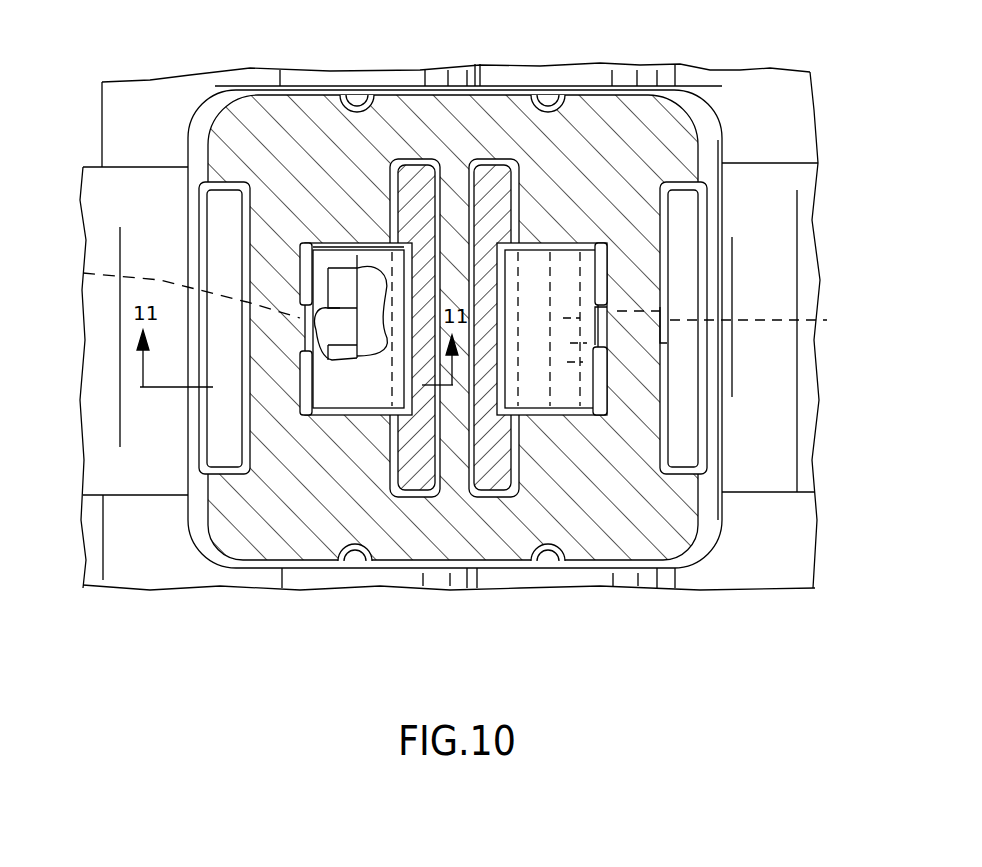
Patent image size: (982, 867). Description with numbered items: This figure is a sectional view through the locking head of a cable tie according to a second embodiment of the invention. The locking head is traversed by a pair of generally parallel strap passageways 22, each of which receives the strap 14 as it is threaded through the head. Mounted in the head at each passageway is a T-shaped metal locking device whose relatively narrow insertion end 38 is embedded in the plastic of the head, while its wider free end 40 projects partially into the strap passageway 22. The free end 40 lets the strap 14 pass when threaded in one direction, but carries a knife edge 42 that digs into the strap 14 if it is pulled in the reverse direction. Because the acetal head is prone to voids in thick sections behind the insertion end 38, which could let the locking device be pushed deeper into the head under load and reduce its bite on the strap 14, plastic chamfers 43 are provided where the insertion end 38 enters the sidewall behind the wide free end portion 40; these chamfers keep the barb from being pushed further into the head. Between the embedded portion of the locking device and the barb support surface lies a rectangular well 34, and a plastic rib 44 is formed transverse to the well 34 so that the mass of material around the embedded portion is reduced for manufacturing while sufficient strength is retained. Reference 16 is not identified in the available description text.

The strap 14 is at (265, 93).
The lower plate 16 is at (575, 583).
The strap passageway 22 is at (388, 160).
The rectangular well 34 is at (400, 252).
The insertion end 38 is at (83, 273).
The free end 40 is at (843, 465).
The knife edge 42 is at (405, 192).
The plastic chamfer 43 is at (303, 282).
The plastic rib 44 is at (333, 330).